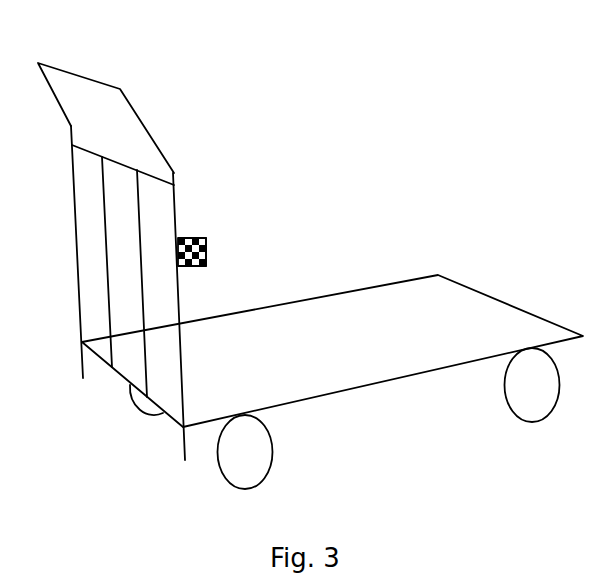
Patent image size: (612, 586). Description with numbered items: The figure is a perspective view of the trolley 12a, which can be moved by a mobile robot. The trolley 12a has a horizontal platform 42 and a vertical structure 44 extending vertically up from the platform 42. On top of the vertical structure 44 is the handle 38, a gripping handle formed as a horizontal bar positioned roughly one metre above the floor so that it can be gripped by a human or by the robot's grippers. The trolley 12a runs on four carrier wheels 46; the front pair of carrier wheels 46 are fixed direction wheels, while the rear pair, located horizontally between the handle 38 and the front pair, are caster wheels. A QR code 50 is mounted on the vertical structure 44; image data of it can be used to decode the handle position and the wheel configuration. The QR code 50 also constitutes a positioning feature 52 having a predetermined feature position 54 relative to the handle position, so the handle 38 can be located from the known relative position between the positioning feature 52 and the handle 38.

The trolley 12a is at (282, 188).
The handle 38 is at (78, 74).
The horizontal platform 42 is at (332, 351).
The vertical structure 44 is at (180, 297).
The carrier wheels 46 is at (538, 398).
The QR code 50 is at (188, 238).
The positioning feature 52 is at (204, 238).
The feature position 54 is at (206, 255).